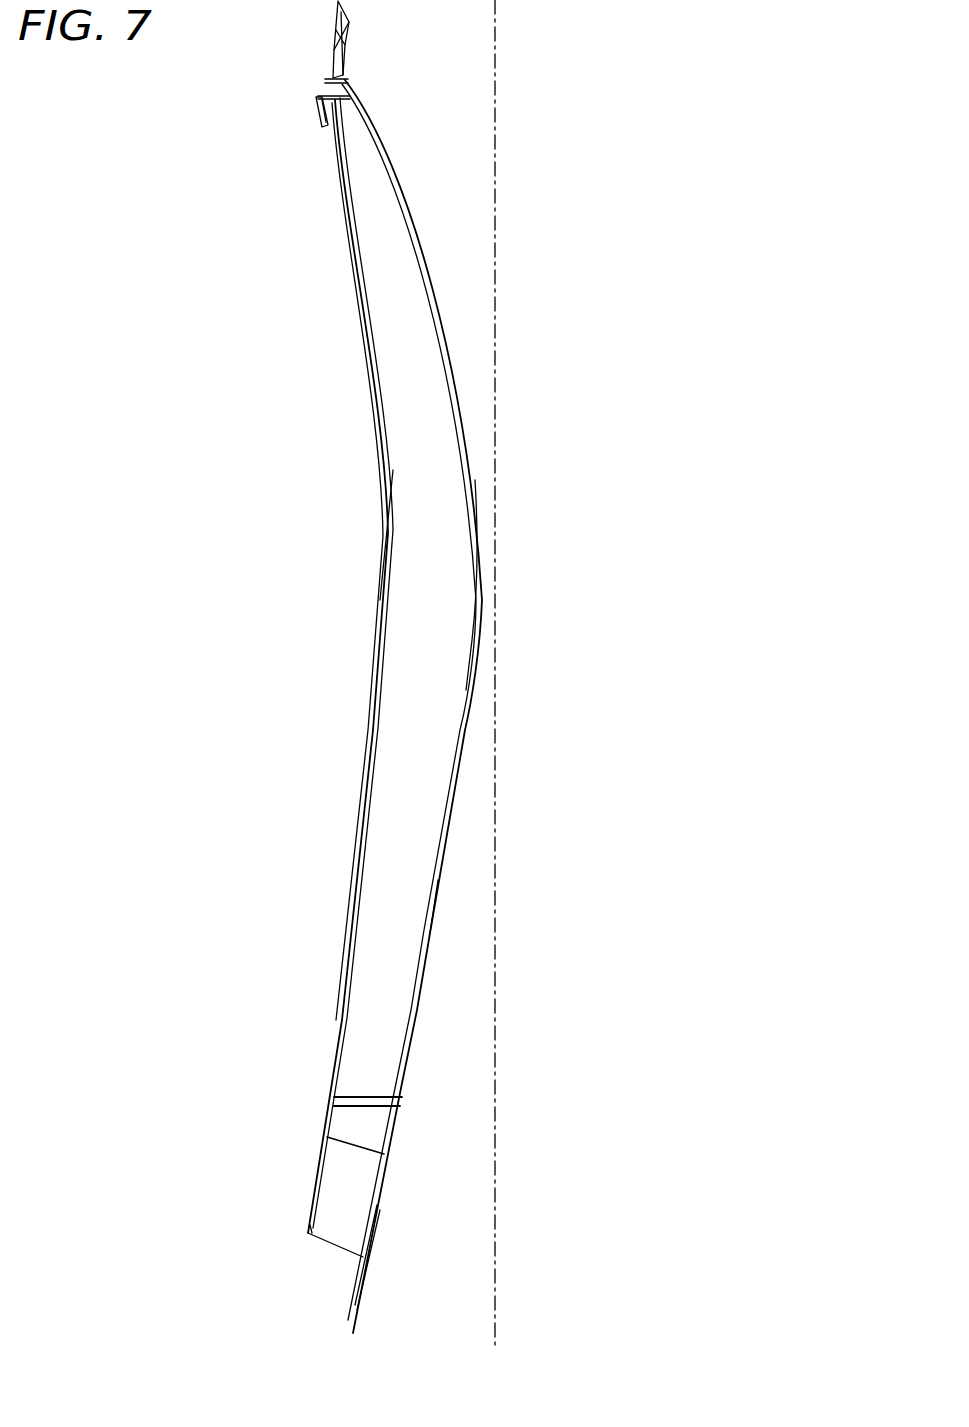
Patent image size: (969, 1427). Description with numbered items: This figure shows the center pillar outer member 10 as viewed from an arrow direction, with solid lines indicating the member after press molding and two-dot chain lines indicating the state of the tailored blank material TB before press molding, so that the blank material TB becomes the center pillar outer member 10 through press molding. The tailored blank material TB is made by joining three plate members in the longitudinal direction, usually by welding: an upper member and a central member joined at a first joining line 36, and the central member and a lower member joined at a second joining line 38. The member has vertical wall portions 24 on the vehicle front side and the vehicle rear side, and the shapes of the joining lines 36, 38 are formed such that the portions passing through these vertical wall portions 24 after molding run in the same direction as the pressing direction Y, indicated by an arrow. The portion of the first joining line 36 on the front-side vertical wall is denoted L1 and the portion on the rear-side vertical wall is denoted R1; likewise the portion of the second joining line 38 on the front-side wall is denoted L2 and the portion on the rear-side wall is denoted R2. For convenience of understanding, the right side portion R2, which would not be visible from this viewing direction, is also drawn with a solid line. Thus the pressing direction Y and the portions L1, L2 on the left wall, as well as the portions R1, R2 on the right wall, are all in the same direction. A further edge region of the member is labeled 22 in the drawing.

The center pillar outer member 10 is at (369, 667).
The first rail edge portion 22 is at (460, 390).
The vertical wall portion 24 is at (412, 399).
The first joining line 36 is at (260, 81).
The second joining line 38 is at (295, 1145).
The left side portion of first joining line L1 is at (327, 80).
The right side portion of first joining line R1 is at (326, 127).
The left side portion of second joining line L2 is at (366, 1092).
The right side portion of second joining line R2 is at (366, 1105).
The tailored blank material TB is at (500, 212).
The pressing direction Y is at (504, 652).